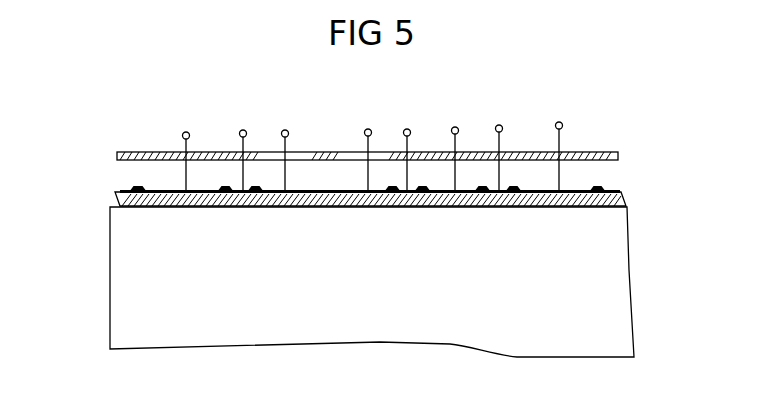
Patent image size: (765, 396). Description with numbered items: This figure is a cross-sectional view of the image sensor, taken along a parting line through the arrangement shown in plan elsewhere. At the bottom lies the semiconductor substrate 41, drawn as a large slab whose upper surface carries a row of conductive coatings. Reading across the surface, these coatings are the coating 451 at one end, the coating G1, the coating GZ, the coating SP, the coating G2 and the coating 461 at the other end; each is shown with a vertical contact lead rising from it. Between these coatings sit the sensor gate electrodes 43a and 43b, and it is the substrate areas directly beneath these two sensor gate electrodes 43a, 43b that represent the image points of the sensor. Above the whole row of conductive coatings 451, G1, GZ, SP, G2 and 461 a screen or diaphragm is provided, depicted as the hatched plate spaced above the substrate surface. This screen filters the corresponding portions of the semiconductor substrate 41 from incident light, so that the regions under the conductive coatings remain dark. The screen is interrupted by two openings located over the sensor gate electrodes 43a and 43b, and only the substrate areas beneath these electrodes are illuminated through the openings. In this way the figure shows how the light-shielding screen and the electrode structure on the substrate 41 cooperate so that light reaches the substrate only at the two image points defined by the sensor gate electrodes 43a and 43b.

The semiconductor substrate 41 is at (612, 300).
The conductive coating 451 is at (206, 207).
The conductive coating G1 is at (248, 207).
The sensor gate electrode 43a is at (300, 207).
The sensor gate electrode 43b is at (377, 207).
The conductive coating GZ is at (422, 207).
The conductive coating SP is at (468, 207).
The conductive coating G2 is at (515, 207).
The conductive coating 461 is at (578, 207).